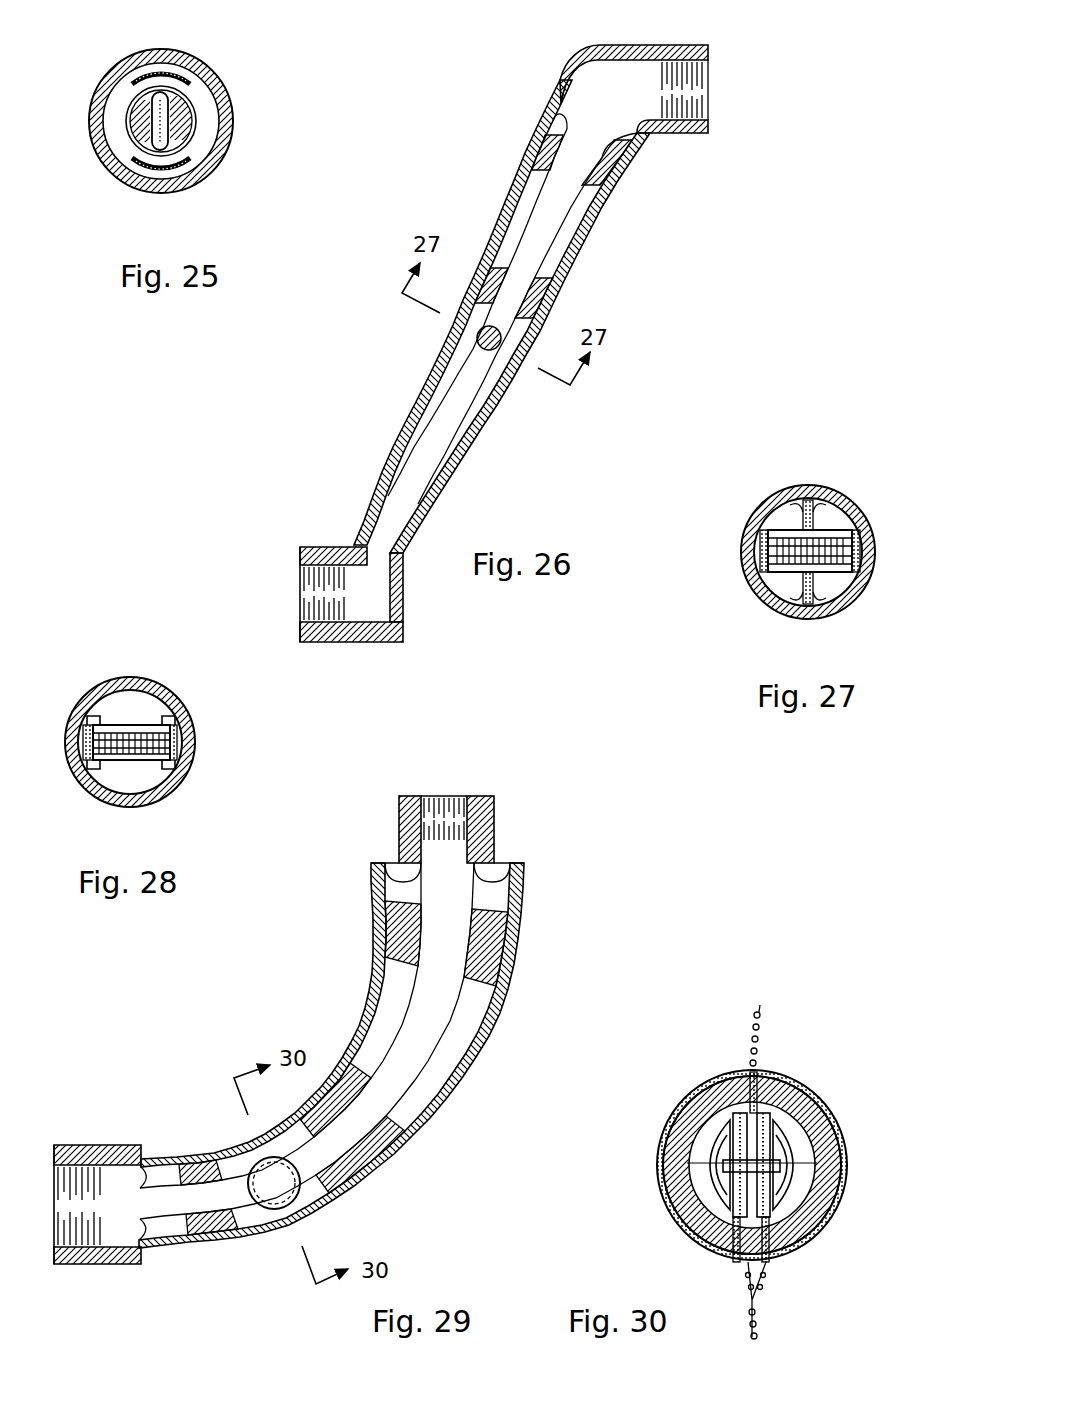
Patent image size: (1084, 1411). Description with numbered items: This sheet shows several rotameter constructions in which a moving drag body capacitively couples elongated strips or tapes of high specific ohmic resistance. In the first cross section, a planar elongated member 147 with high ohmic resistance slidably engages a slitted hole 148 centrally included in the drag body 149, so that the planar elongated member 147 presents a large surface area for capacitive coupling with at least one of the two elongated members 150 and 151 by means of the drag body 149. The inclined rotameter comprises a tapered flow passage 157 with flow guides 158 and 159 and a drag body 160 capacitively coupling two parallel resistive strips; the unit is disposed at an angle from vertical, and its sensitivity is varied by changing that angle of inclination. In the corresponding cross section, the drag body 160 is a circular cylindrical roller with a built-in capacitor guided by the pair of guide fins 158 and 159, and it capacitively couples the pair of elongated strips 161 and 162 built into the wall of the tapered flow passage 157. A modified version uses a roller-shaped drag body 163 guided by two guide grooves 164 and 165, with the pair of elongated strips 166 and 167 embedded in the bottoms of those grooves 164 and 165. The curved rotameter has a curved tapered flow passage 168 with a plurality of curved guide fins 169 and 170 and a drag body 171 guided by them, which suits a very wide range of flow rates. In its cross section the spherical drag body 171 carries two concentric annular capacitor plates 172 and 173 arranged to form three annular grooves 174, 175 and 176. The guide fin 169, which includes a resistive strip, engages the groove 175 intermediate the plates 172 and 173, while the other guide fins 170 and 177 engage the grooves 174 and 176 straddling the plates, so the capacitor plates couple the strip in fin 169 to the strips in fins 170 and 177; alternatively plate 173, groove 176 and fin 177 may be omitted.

In FIG. 25, the planar elongated member 147 is at (193, 123).
In FIG. 25, the slitted hole 148 is at (192, 142).
In FIG. 25, the drag body 149 is at (125, 110).
In FIG. 25, the elongated member 150 is at (180, 77).
In FIG. 25, the elongated member 151 is at (150, 167).
In FIG. 26, the tapered flow passage 157 is at (570, 193).
In FIG. 27, the tapered flow passage 157 is at (787, 518).
In FIG. 26, the guide fin 158 is at (535, 202).
In FIG. 27, the guide fin 158 is at (827, 500).
In FIG. 26, the guide fin 159 is at (575, 222).
In FIG. 27, the guide fin 159 is at (780, 598).
In FIG. 26, the drag body 160 is at (480, 346).
In FIG. 27, the drag body 160 is at (827, 573).
In FIG. 27, the elongated strip 161 is at (760, 548).
In FIG. 27, the elongated strip 162 is at (858, 540).
In FIG. 28, the drag body 163 is at (135, 727).
In FIG. 28, the guide groove 164 is at (107, 720).
In FIG. 28, the guide groove 165 is at (153, 763).
In FIG. 28, the elongated strip 166 is at (82, 747).
In FIG. 28, the elongated strip 167 is at (190, 732).
In FIG. 29, the curved tapered flow passage 168 is at (427, 1012).
In FIG. 29, the curved guide fin 169 is at (387, 1026).
In FIG. 30, the curved guide fin 169 is at (770, 1067).
In FIG. 29, the curved guide fin 170 is at (478, 990).
In FIG. 30, the curved guide fin 170 is at (700, 1243).
In FIG. 29, the drag body 171 is at (262, 1162).
In FIG. 30, the drag body 171 is at (667, 1187).
In FIG. 30, the capacitor plate 172 is at (733, 1070).
In FIG. 30, the capacitor plate 173 is at (790, 1110).
In FIG. 30, the annular groove 174 is at (703, 1082).
In FIG. 30, the annular groove 175 is at (800, 1257).
In FIG. 30, the annular groove 176 is at (817, 1123).
In FIG. 30, the guide fin 177 is at (820, 1223).